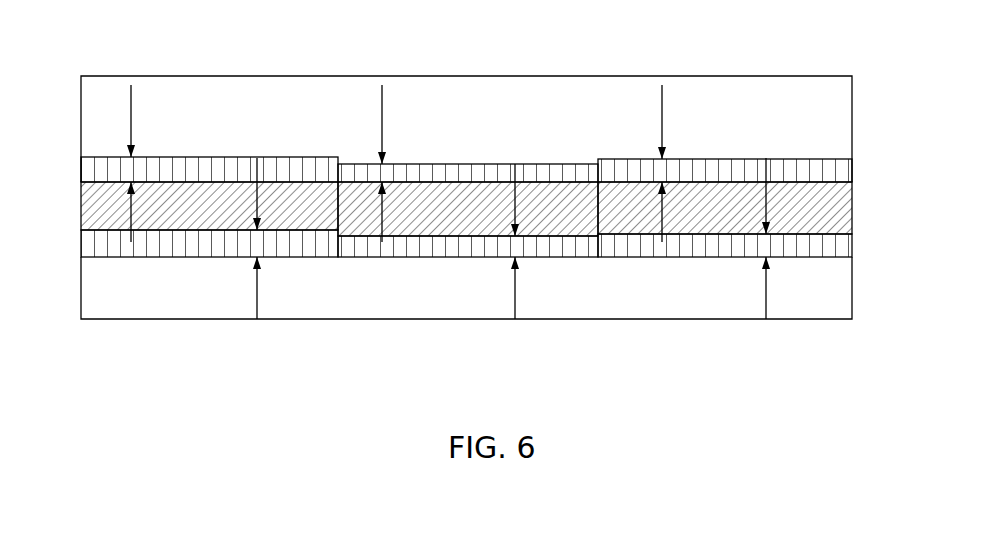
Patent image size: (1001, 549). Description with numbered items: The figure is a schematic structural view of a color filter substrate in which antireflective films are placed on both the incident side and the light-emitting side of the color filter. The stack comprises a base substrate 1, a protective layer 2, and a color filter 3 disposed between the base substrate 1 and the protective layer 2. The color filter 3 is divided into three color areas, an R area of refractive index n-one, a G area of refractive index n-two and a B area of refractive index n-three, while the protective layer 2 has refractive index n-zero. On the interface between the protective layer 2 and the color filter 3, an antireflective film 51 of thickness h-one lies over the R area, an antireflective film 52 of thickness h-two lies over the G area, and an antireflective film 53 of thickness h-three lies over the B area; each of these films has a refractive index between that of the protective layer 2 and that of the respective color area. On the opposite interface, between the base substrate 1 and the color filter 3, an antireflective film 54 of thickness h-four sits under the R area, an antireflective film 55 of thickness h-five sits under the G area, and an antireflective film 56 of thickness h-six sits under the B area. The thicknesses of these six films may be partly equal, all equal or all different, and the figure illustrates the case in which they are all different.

The base substrate 1 is at (817, 275).
The protective layer 2 is at (827, 124).
The color filter 3 is at (818, 192).
The antireflective film 51 is at (108, 177).
The antireflective film 52 is at (363, 172).
The antireflective film 53 is at (637, 173).
The antireflective film 54 is at (240, 246).
The antireflective film 55 is at (503, 245).
The antireflective film 56 is at (755, 245).